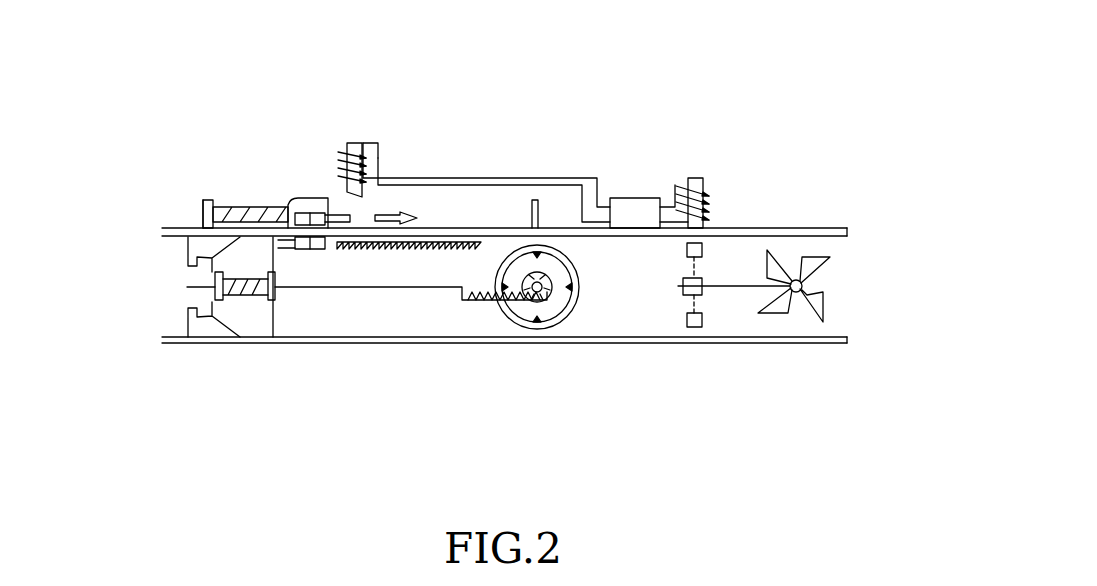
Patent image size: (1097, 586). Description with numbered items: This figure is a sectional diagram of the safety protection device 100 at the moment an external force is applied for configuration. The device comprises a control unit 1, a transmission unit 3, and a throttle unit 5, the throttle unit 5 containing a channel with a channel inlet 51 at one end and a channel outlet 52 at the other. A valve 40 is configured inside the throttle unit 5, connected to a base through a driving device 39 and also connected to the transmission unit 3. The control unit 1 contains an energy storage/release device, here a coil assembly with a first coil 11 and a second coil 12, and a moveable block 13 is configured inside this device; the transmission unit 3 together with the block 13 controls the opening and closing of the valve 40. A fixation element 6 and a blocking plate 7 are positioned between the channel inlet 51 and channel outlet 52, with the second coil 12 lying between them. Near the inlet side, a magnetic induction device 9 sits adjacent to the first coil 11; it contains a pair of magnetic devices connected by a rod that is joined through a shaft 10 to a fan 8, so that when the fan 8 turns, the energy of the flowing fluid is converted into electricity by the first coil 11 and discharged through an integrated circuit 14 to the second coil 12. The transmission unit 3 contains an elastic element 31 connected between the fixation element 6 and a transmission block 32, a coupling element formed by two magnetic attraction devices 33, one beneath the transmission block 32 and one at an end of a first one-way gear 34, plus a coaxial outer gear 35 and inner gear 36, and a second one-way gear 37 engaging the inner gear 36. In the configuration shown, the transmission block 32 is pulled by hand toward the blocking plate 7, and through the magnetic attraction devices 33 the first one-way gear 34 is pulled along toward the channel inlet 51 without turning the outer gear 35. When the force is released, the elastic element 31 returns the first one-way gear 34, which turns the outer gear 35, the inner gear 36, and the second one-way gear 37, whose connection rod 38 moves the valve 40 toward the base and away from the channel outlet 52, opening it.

The safety protection device 100 is at (283, 97).
The control unit 1 is at (480, 163).
The transmission unit 3 is at (237, 160).
The elastic element 31 is at (207, 208).
The transmission block 32 is at (292, 192).
The fixation element 6 is at (208, 210).
The moveable block 13 is at (350, 140).
The second coil 12 is at (372, 140).
The blocking plate 7 is at (537, 210).
The integrated circuit 14 is at (635, 207).
The first coil 11 is at (708, 198).
The shaft 10 is at (730, 283).
The magnetic induction device 9 is at (703, 298).
The fan 8 is at (812, 300).
The channel inlet 51 is at (842, 280).
The throttle unit 5 is at (203, 345).
The channel outlet 52 is at (198, 272).
The valve 40 is at (212, 283).
The driving device 39 is at (247, 295).
The magnetic attraction devices 33 is at (320, 249).
The first one-way gear 34 is at (435, 252).
The connection rod 38 is at (350, 288).
The second one-way gear 37 is at (490, 300).
The inner gear 36 is at (538, 290).
The outer gear 35 is at (573, 287).